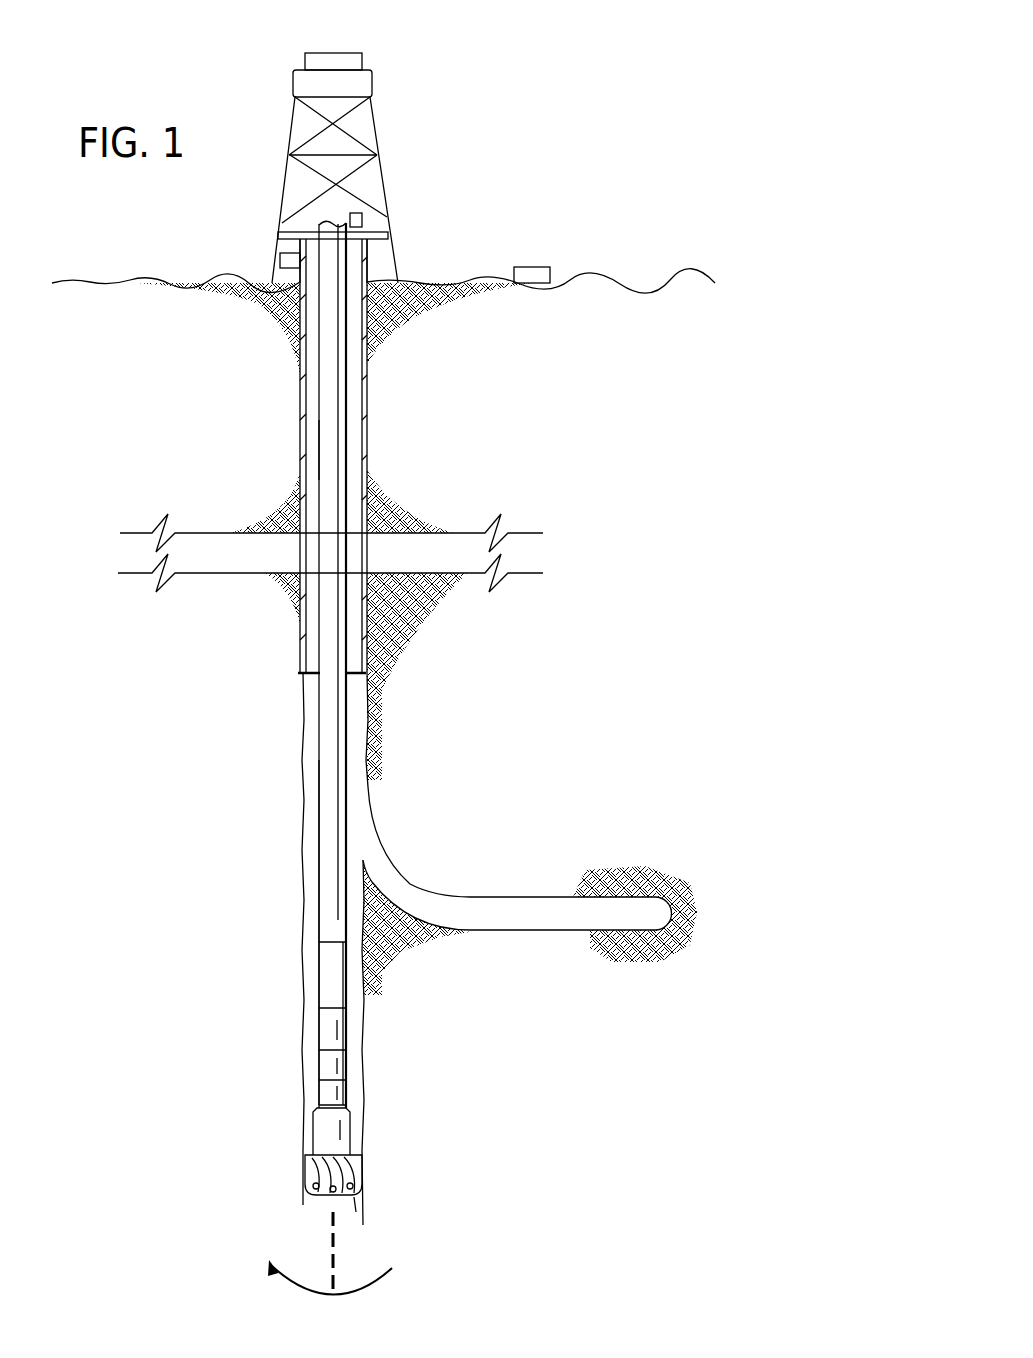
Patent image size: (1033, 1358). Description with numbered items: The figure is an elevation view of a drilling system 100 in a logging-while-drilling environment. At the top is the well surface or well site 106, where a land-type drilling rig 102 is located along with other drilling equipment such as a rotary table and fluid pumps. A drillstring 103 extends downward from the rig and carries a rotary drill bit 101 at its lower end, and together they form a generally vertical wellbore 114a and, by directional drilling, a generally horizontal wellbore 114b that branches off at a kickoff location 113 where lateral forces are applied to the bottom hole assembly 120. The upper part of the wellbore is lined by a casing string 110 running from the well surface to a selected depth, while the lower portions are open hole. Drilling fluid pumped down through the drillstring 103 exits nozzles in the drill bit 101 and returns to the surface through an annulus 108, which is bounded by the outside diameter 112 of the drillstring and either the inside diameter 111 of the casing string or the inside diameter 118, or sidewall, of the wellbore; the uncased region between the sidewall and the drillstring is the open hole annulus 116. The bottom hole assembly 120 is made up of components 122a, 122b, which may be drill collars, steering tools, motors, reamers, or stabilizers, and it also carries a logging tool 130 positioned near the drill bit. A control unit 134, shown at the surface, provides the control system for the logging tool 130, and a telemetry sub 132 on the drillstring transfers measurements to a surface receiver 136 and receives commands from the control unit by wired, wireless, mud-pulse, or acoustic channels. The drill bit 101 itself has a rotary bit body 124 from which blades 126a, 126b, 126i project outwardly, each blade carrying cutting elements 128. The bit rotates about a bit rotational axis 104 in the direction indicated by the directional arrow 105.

The drilling system 100 is at (537, 60).
The drill bit 101 is at (208, 1172).
The drilling rig 102 is at (222, 100).
The drillstring 103 is at (355, 393).
The bit rotational axis 104 is at (330, 1223).
The directional arrow 105 is at (392, 1272).
The well surface or well site 106 is at (380, 258).
The annulus 108 is at (302, 402).
The casing string 110 is at (300, 452).
The inside diameter of casing string 111 is at (362, 440).
The outside diameter of drillstring 112 is at (318, 614).
The kickoff location 113 is at (366, 778).
The generally vertical wellbore 114a is at (208, 652).
The generally horizontal wellbore 114b is at (515, 872).
The open hole annulus 116 is at (318, 790).
The inside diameter of wellbore 118 is at (318, 840).
The bottom hole assembly 120 is at (382, 1058).
The component of bottom hole assembly 122a is at (322, 967).
The component of bottom hole assembly 122b is at (322, 1031).
The rotary bit body 124 is at (313, 1135).
The blade 126a is at (303, 1190).
The blade 126b is at (308, 1167).
The blade 126i is at (362, 1173).
The cutting elements 128 is at (355, 1203).
The logging tool 130 is at (322, 1096).
The telemetry sub 132 is at (322, 1066).
The control unit 134 is at (366, 222).
The surface receiver 136 is at (540, 266).